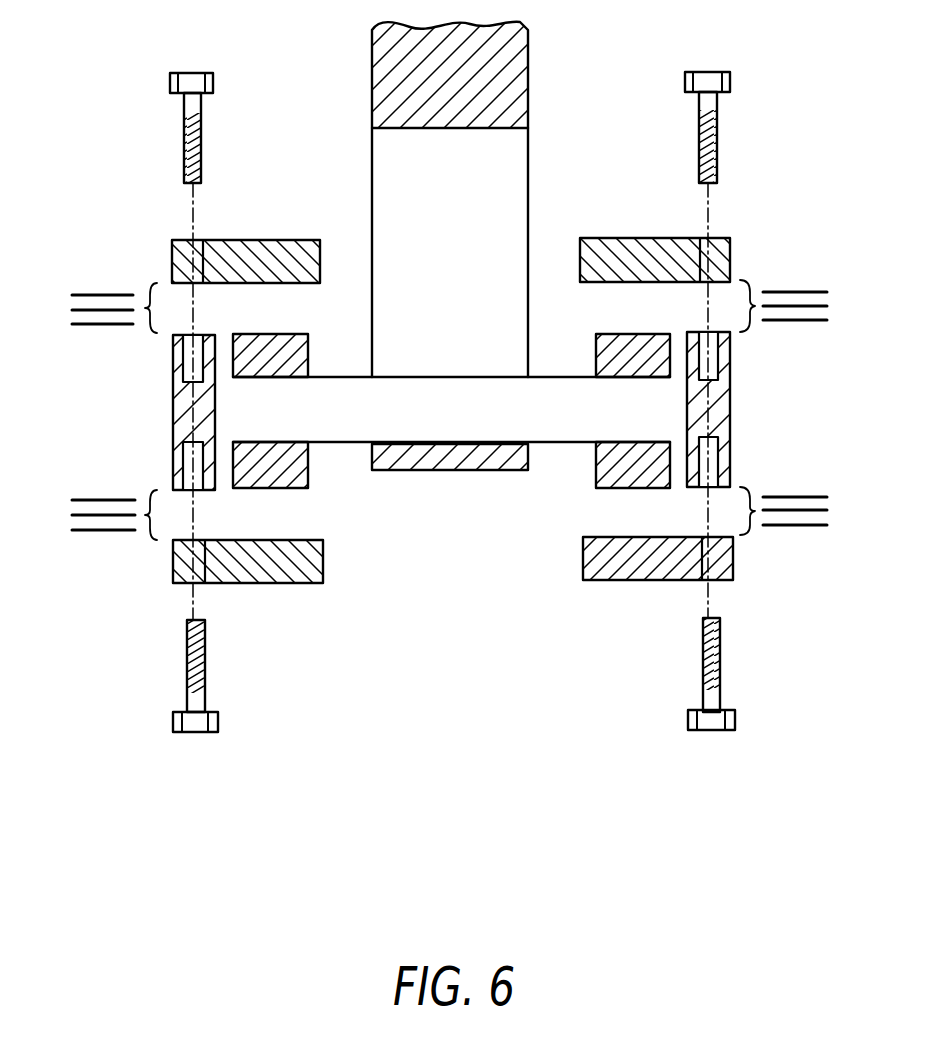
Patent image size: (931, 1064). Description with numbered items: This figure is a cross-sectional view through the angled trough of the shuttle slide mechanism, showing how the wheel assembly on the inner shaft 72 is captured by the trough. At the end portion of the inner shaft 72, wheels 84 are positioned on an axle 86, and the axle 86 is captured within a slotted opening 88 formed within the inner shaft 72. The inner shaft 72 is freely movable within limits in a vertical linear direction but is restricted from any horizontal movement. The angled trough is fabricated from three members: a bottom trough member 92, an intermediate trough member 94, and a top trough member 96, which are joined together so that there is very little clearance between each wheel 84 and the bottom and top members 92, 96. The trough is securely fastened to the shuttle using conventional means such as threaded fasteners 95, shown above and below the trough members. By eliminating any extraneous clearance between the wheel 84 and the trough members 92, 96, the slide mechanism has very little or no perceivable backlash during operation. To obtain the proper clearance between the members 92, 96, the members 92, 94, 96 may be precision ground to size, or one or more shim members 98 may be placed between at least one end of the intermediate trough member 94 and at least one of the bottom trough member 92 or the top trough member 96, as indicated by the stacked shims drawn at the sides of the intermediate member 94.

The inner shaft 72 is at (378, 55).
The wheel 84 is at (305, 470).
The axle 86 is at (443, 430).
The slotted opening 88 is at (455, 254).
The bottom trough member 92 is at (275, 575).
The intermediate trough member 94 is at (178, 412).
The threaded fastener 95 is at (192, 72).
The top trough member 96 is at (272, 240).
The shim member 98 is at (80, 331).